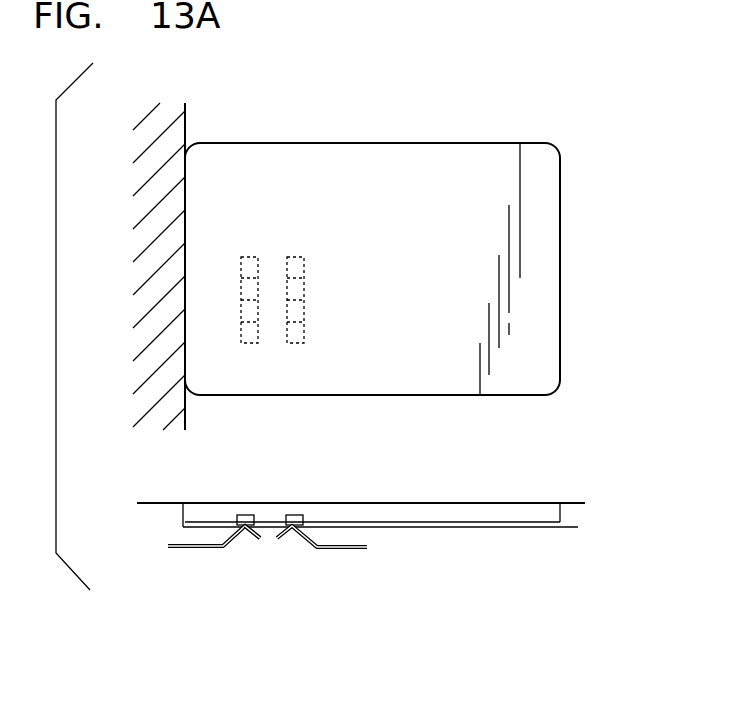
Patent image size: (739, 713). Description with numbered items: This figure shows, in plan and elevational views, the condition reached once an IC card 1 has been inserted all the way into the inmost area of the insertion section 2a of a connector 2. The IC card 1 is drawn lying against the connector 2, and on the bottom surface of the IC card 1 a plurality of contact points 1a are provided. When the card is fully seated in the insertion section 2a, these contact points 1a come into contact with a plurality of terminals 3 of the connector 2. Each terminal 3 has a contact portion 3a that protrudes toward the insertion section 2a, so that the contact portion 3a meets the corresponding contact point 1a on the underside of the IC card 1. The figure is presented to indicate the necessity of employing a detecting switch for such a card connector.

The IC card 1 is at (548, 204).
The contact points 1a is at (297, 256).
The connector 2 is at (181, 130).
The insertion section 2a is at (192, 409).
The terminals 3 is at (347, 550).
The contact portion 3a is at (248, 530).